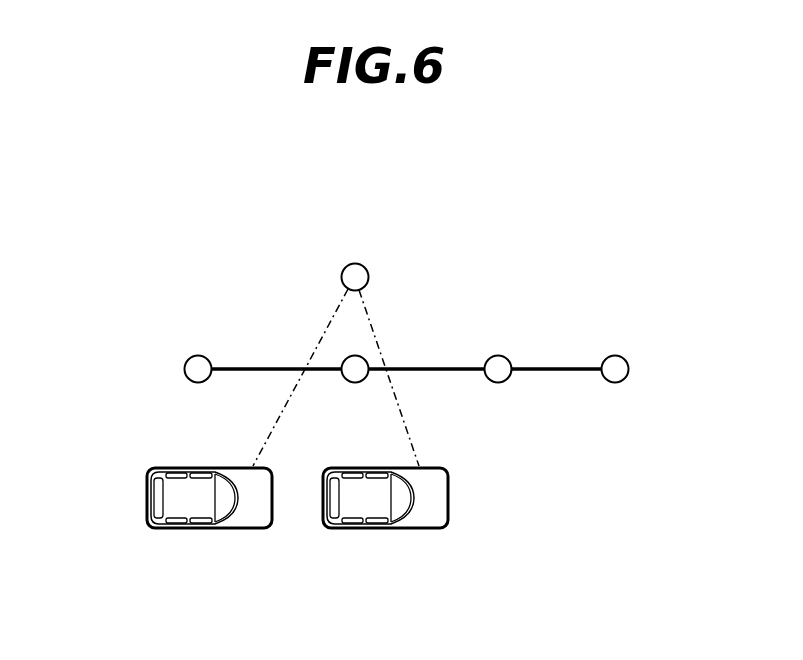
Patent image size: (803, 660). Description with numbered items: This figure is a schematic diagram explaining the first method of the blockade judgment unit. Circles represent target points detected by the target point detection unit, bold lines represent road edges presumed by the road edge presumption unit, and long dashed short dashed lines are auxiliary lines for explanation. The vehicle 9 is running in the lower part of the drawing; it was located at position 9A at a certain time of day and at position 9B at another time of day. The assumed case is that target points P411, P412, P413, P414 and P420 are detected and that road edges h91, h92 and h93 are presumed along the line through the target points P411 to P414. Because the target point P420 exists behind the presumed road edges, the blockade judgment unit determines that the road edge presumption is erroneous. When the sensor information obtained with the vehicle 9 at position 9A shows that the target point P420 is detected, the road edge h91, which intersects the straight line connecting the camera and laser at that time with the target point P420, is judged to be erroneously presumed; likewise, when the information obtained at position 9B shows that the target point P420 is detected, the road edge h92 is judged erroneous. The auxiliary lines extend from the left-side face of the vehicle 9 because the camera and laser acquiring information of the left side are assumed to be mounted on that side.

The target point P411 is at (186, 364).
The target point P412 is at (362, 358).
The target point P413 is at (490, 358).
The target point P414 is at (613, 358).
The target point P420 is at (363, 264).
The road edge h91 is at (278, 371).
The road edge h92 is at (467, 371).
The road edge h93 is at (563, 371).
The vehicle 9 is at (257, 514).
The position 9A is at (146, 520).
The position 9B is at (323, 520).